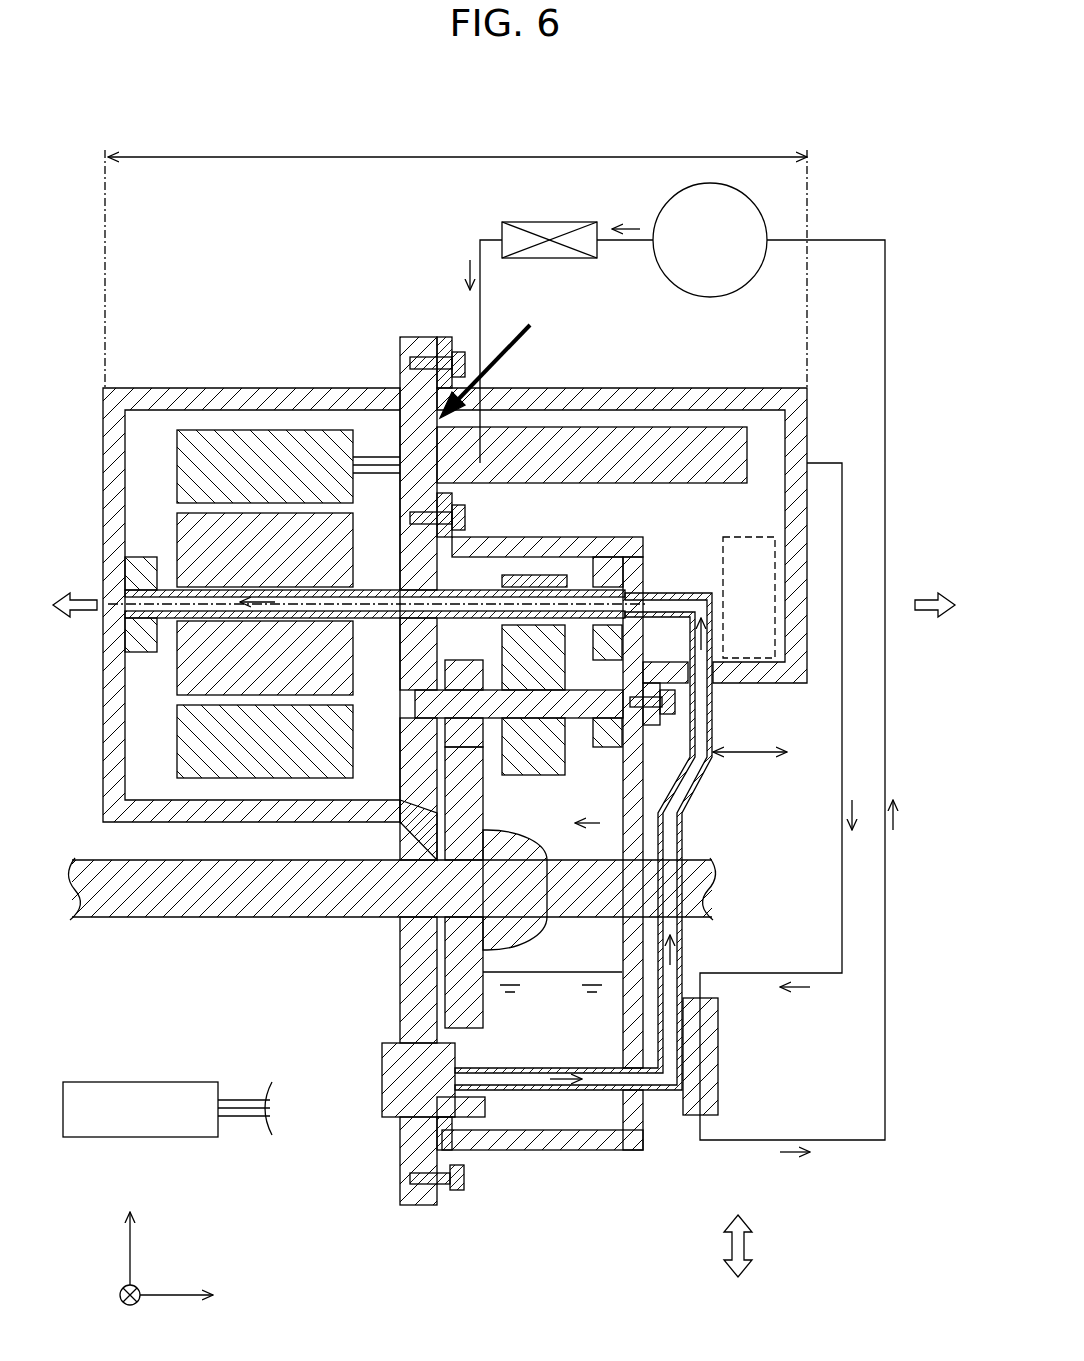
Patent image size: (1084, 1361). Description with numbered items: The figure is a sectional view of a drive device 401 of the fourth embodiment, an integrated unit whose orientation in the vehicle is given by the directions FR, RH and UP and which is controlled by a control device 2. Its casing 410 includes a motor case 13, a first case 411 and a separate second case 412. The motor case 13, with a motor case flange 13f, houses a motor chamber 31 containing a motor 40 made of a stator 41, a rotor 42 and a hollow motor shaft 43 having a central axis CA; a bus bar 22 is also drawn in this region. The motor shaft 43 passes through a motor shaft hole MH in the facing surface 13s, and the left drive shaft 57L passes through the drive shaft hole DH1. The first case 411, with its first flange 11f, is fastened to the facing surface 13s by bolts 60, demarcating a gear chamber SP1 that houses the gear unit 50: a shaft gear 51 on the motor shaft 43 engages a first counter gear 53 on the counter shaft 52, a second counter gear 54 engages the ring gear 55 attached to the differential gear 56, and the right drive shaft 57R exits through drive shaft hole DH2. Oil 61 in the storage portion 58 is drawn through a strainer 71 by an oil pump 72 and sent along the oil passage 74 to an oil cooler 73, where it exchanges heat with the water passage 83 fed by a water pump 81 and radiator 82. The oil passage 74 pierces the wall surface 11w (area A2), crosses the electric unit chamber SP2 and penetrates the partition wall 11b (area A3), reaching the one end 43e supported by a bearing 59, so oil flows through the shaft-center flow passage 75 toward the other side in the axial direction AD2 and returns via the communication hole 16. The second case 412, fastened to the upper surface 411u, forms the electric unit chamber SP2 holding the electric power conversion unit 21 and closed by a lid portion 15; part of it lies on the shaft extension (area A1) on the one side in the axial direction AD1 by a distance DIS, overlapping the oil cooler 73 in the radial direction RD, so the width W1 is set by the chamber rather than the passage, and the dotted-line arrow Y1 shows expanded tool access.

The drive device 401 is at (924, 134).
The casing 410 is at (95, 335).
The first case 411 is at (573, 1205).
The upper surface 411u is at (652, 1128).
The second case 412 is at (820, 380).
The width W1 is at (456, 255).
The motor case 13 is at (177, 393).
The facing surface 13s is at (455, 415).
The motor case flange 13f is at (415, 357).
The first flange 11f is at (445, 355).
The partition wall 11b is at (665, 545).
The wall surface 11w is at (735, 688).
The bolts 60 is at (468, 362).
The motor 40 is at (275, 426).
The stator 41 is at (312, 450).
The rotor 42 is at (258, 533).
The motor shaft 43 is at (210, 640).
The one end 43e is at (625, 620).
The motor chamber 31 is at (152, 672).
The bus bar 22 is at (372, 465).
The electric power conversion unit 21 is at (607, 427).
The shaft-center flow passage 75 is at (160, 575).
The shaft gear 51 is at (362, 605).
The motor shaft hole MH is at (300, 615).
The central axis CA is at (165, 605).
The one side in the axial direction AD1 is at (935, 593).
The other side in the axial direction AD2 is at (85, 593).
The communication hole 16 is at (418, 800).
The radiator 82 is at (530, 222).
The water pump 81 is at (672, 215).
The water passage 83 is at (828, 1140).
The dotted-line arrow Y1 is at (540, 330).
The bearing 59 is at (575, 557).
The area A3 is at (640, 530).
The electric unit chamber SP2 is at (763, 449).
The area A1 is at (775, 612).
The lid portion 15 is at (797, 640).
The area A2 is at (750, 738).
The distance DIS is at (762, 756).
The ring gear 55 is at (440, 995).
The differential gear 56 is at (470, 930).
The counter shaft 52 is at (577, 710).
The first counter gear 53 is at (593, 750).
The second counter gear 54 is at (643, 787).
The gear unit 50 is at (603, 823).
The oil passage 74 is at (693, 847).
The drive shaft 57L is at (115, 920).
The drive shaft 57R is at (709, 883).
The drive shaft hole DH1 is at (385, 900).
The drive shaft hole DH2 is at (650, 925).
The gear chamber SP1 is at (549, 938).
The storage portion 58 is at (540, 1122).
The oil 61 is at (595, 1105).
The strainer 71 is at (470, 1107).
The oil pump 72 is at (382, 1075).
The oil cooler 73 is at (712, 1055).
The radial direction RD is at (753, 1247).
The control device 2 is at (135, 1082).
The direction UP is at (163, 1240).
The direction RH is at (240, 1297).
The direction FR is at (97, 1312).